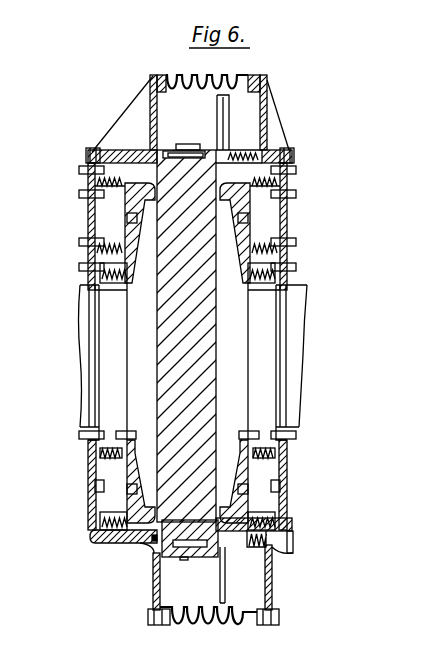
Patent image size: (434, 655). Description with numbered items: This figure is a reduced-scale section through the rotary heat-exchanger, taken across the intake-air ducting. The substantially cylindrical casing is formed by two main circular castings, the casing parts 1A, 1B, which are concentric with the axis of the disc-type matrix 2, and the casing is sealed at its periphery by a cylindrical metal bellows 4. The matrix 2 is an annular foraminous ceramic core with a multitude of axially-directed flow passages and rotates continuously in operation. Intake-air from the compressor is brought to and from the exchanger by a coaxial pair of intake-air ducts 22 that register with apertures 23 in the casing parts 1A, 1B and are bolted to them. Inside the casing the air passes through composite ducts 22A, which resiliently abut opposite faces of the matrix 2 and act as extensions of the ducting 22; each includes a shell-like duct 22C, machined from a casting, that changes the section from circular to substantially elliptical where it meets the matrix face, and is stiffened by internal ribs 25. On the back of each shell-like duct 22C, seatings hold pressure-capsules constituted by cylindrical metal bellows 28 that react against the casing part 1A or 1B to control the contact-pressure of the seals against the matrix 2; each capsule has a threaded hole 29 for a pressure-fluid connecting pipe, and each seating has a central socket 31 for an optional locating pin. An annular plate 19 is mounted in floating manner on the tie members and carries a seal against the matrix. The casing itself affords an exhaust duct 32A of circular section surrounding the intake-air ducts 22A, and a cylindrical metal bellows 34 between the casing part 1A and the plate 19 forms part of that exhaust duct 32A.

The disc-type matrix 2 is at (205, 325).
The cylindrical metal bellows 4 is at (200, 78).
The annular plate 19 is at (217, 104).
The casing part 1A is at (267, 113).
The casing part 1B is at (150, 131).
The intake-air duct 22 is at (86, 298).
The intake-air duct 22A is at (268, 284).
The shell-like duct 22C is at (112, 189).
The aperture 23 is at (93, 331).
The internal stiffening rib 25 is at (90, 290).
The cylindrical metal bellows 28 is at (96, 150).
The threaded hole 29 is at (89, 212).
The central socket 31 is at (127, 221).
The exhaust duct 32A is at (147, 540).
The cylindrical metal bellows 34 is at (260, 546).